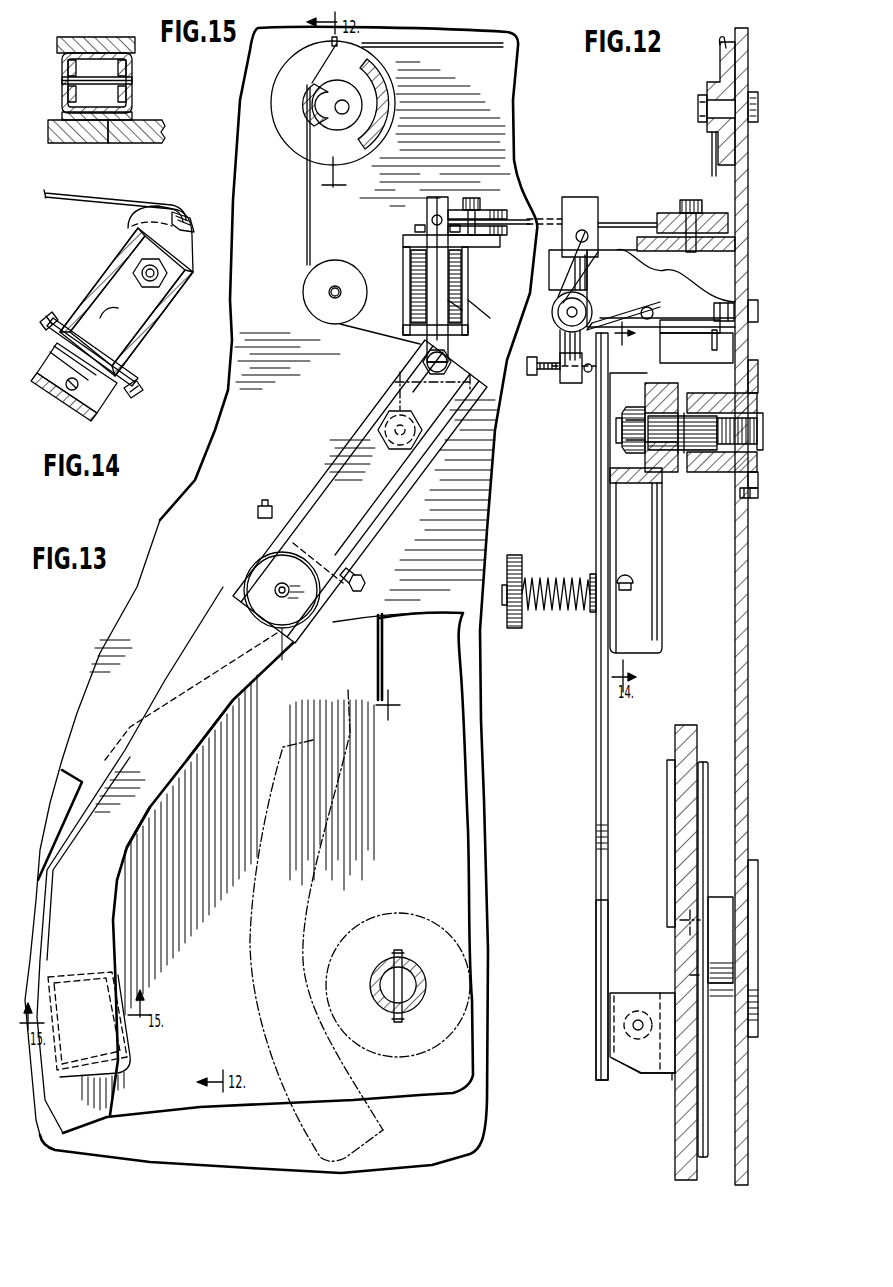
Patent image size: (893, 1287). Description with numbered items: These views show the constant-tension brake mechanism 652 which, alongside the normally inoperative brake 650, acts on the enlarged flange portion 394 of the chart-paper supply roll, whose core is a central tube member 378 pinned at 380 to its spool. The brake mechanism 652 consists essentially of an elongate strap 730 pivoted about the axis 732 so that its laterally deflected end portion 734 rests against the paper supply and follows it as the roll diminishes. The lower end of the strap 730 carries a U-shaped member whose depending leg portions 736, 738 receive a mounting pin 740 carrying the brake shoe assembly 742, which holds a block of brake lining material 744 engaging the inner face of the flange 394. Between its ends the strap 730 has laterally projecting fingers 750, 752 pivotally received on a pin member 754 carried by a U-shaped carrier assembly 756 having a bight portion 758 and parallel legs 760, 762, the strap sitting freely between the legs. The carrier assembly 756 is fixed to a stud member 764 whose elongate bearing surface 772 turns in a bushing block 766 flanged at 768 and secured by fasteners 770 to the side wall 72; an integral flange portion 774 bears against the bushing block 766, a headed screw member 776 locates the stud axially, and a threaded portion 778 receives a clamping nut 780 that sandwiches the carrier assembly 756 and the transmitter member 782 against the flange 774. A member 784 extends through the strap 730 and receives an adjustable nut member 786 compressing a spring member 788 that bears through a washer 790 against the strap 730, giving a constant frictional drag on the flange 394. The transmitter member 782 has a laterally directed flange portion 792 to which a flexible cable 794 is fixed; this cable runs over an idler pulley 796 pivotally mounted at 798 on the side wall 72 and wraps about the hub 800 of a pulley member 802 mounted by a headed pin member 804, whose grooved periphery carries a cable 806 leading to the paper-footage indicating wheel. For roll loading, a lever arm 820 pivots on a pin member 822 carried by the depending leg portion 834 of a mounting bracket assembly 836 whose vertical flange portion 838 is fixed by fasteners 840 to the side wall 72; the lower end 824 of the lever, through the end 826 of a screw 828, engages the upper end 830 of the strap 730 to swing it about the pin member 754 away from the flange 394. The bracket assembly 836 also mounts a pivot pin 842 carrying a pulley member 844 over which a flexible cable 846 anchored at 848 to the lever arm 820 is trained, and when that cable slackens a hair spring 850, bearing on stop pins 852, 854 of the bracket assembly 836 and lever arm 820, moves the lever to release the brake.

In FIG. 13, the side wall 72 is at (230, 454).
In FIG. 12, the side wall 72 is at (749, 656).
In FIG. 13, the central tube member 378 is at (420, 1010).
In FIG. 13, the pin 380 is at (396, 1024).
In FIG. 15, the enlarged flange portion 394 is at (148, 140).
In FIG. 13, the enlarged flange portion 394 is at (432, 612).
In FIG. 12, the enlarged flange portion 394 is at (684, 726).
In FIG. 12, the brake 650 is at (718, 836).
In FIG. 13, the brake mechanism 652 is at (163, 804).
In FIG. 13, the elongate strap 730 is at (203, 740).
In FIG. 12, the elongate strap 730 is at (605, 792).
In FIG. 13, the axis 732 is at (392, 452).
In FIG. 13, the laterally deflected end portion 734 is at (90, 951).
In FIG. 15, the depending leg portion 736 is at (131, 62).
In FIG. 12, the depending leg portion 736 is at (618, 1005).
In FIG. 15, the depending leg portion 738 is at (63, 62).
In FIG. 15, the mounting pin 740 is at (130, 80).
In FIG. 12, the mounting pin 740 is at (640, 1020).
In FIG. 15, the brake shoe assembly 742 is at (141, 104).
In FIG. 12, the brake shoe assembly 742 is at (640, 1083).
In FIG. 15, the block of brake lining material 744 is at (106, 143).
In FIG. 12, the block of brake lining material 744 is at (672, 1078).
In FIG. 14, the laterally projecting finger 750 is at (132, 297).
In FIG. 14, the laterally projecting finger 752 is at (133, 360).
In FIG. 14, the pin member 754 is at (134, 394).
In FIG. 13, the pin member 754 is at (352, 612).
In FIG. 12, the pin member 754 is at (635, 586).
In FIG. 14, the carrier assembly 756 is at (173, 312).
In FIG. 13, the carrier assembly 756 is at (394, 537).
In FIG. 12, the carrier assembly 756 is at (671, 594).
In FIG. 14, the bight portion 758 is at (78, 414).
In FIG. 14, the parallel leg 760 is at (150, 338).
In FIG. 14, the parallel leg 762 is at (110, 275).
In FIG. 12, the stud member 764 is at (662, 472).
In FIG. 12, the bushing block 766 is at (755, 400).
In FIG. 12, the flange 768 is at (758, 478).
In FIG. 12, the fasteners 770 is at (758, 496).
In FIG. 12, the elongate bearing surface 772 is at (698, 472).
In FIG. 12, the integral flange portion 774 is at (686, 410).
In FIG. 12, the headed screw member 776 is at (757, 428).
In FIG. 12, the threaded portion 778 is at (620, 435).
In FIG. 12, the clamping nut 780 is at (617, 455).
In FIG. 14, the transmitter member 782 is at (190, 232).
In FIG. 12, the transmitter member 782 is at (668, 360).
In FIG. 14, the screw 784 is at (68, 392).
In FIG. 13, the screw 784 is at (272, 602).
In FIG. 12, the screw 784 is at (502, 592).
In FIG. 13, the adjustable nut member 786 is at (280, 628).
In FIG. 12, the adjustable nut member 786 is at (535, 545).
In FIG. 12, the spring member 788 is at (550, 612).
In FIG. 12, the washer 790 is at (590, 575).
In FIG. 12, the laterally directed flange portion 792 is at (702, 351).
In FIG. 14, the flexible cable 794 is at (75, 203).
In FIG. 13, the flexible cable 794 is at (360, 330).
In FIG. 12, the flexible cable 794 is at (718, 340).
In FIG. 13, the idler pulley 796 is at (350, 270).
In FIG. 13, the pivot mounting 798 is at (332, 286).
In FIG. 13, the hub 800 is at (316, 106).
In FIG. 13, the pulley member 802 is at (397, 134).
In FIG. 12, the pulley member 802 is at (728, 140).
In FIG. 13, the headed pin member 804 is at (322, 72).
In FIG. 12, the headed pin member 804 is at (714, 106).
In FIG. 13, the cable 806 is at (478, 50).
In FIG. 13, the lever arm 820 is at (455, 271).
In FIG. 12, the lever arm 820 is at (563, 222).
In FIG. 12, the pin member 822 is at (578, 310).
In FIG. 12, the lower end 824 is at (566, 383).
In FIG. 12, the end of screw 826 is at (588, 378).
In FIG. 12, the screw 828 is at (542, 377).
In FIG. 13, the upper end 830 is at (452, 360).
In FIG. 12, the upper end 830 is at (610, 358).
In FIG. 13, the depending leg portion 834 is at (506, 343).
In FIG. 12, the depending leg portion 834 is at (690, 278).
In FIG. 12, the mounting bracket assembly 836 is at (612, 243).
In FIG. 12, the vertical flange portion 838 is at (736, 308).
In FIG. 12, the fasteners 840 is at (759, 310).
In FIG. 13, the pivot pin 842 is at (478, 198).
In FIG. 12, the pivot pin 842 is at (690, 200).
In FIG. 13, the pulley member 844 is at (500, 210).
In FIG. 12, the pulley member 844 is at (728, 214).
In FIG. 13, the flexible cable 846 is at (520, 220).
In FIG. 12, the flexible cable 846 is at (610, 222).
In FIG. 13, the anchor 848 is at (436, 196).
In FIG. 12, the anchor 848 is at (566, 198).
In FIG. 13, the hair spring 850 is at (411, 292).
In FIG. 12, the hair spring 850 is at (573, 277).
In FIG. 12, the stop pin 852 is at (655, 310).
In FIG. 12, the stop pin 854 is at (584, 230).